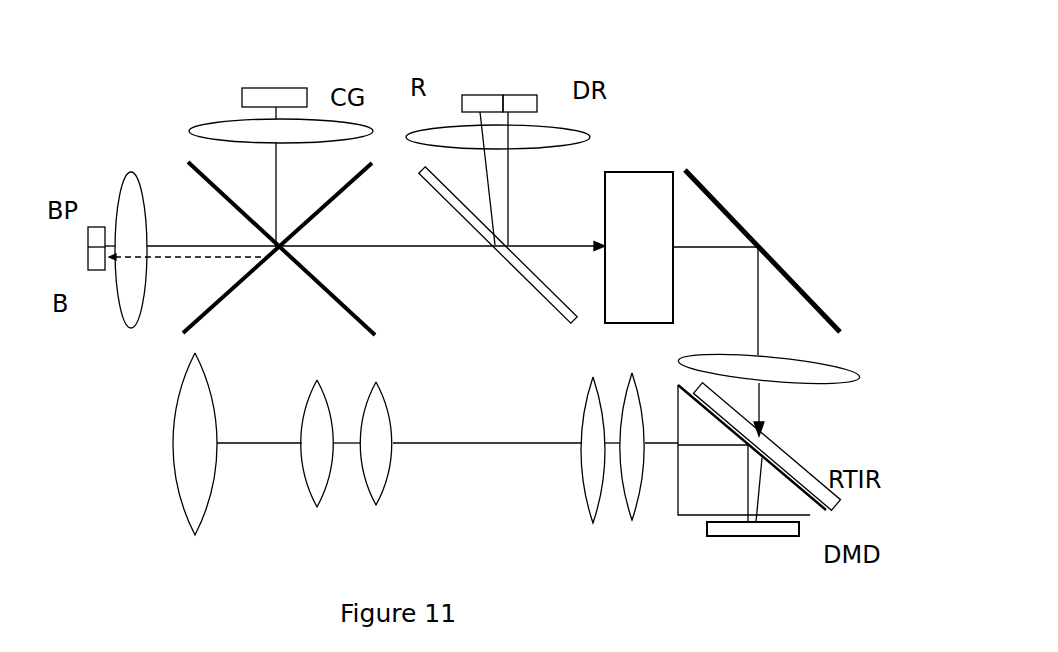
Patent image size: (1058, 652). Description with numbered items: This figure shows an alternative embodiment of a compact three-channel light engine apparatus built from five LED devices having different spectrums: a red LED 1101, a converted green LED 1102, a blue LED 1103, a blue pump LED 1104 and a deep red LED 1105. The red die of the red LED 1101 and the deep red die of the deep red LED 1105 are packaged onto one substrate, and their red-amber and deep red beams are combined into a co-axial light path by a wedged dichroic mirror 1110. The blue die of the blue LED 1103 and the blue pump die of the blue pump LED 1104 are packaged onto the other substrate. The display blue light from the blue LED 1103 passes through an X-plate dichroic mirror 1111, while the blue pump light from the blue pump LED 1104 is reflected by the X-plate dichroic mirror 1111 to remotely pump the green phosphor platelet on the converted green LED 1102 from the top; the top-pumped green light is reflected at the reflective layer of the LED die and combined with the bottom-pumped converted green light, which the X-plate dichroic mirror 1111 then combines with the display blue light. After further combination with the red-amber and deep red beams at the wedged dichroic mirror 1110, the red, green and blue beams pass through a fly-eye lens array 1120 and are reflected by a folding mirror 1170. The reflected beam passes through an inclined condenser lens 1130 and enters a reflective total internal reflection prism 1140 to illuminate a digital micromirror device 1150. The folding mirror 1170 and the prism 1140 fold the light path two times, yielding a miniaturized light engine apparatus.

The red LED 1101 is at (477, 94).
The converted green (CG) LED 1102 is at (271, 86).
The blue LED 1103 is at (98, 273).
The blue pump LED 1104 is at (105, 226).
The deep red LED 1105 is at (520, 94).
The wedged dichroic mirror 1110 is at (543, 302).
The X-plate dichroic mirror 1111 is at (347, 290).
The fly-eye lens array 1120 is at (662, 166).
The inclined condenser lens 1130 is at (860, 377).
The RTIR prism 1140 is at (842, 505).
The DMD 1150 is at (737, 537).
The folding mirror 1170 is at (830, 312).